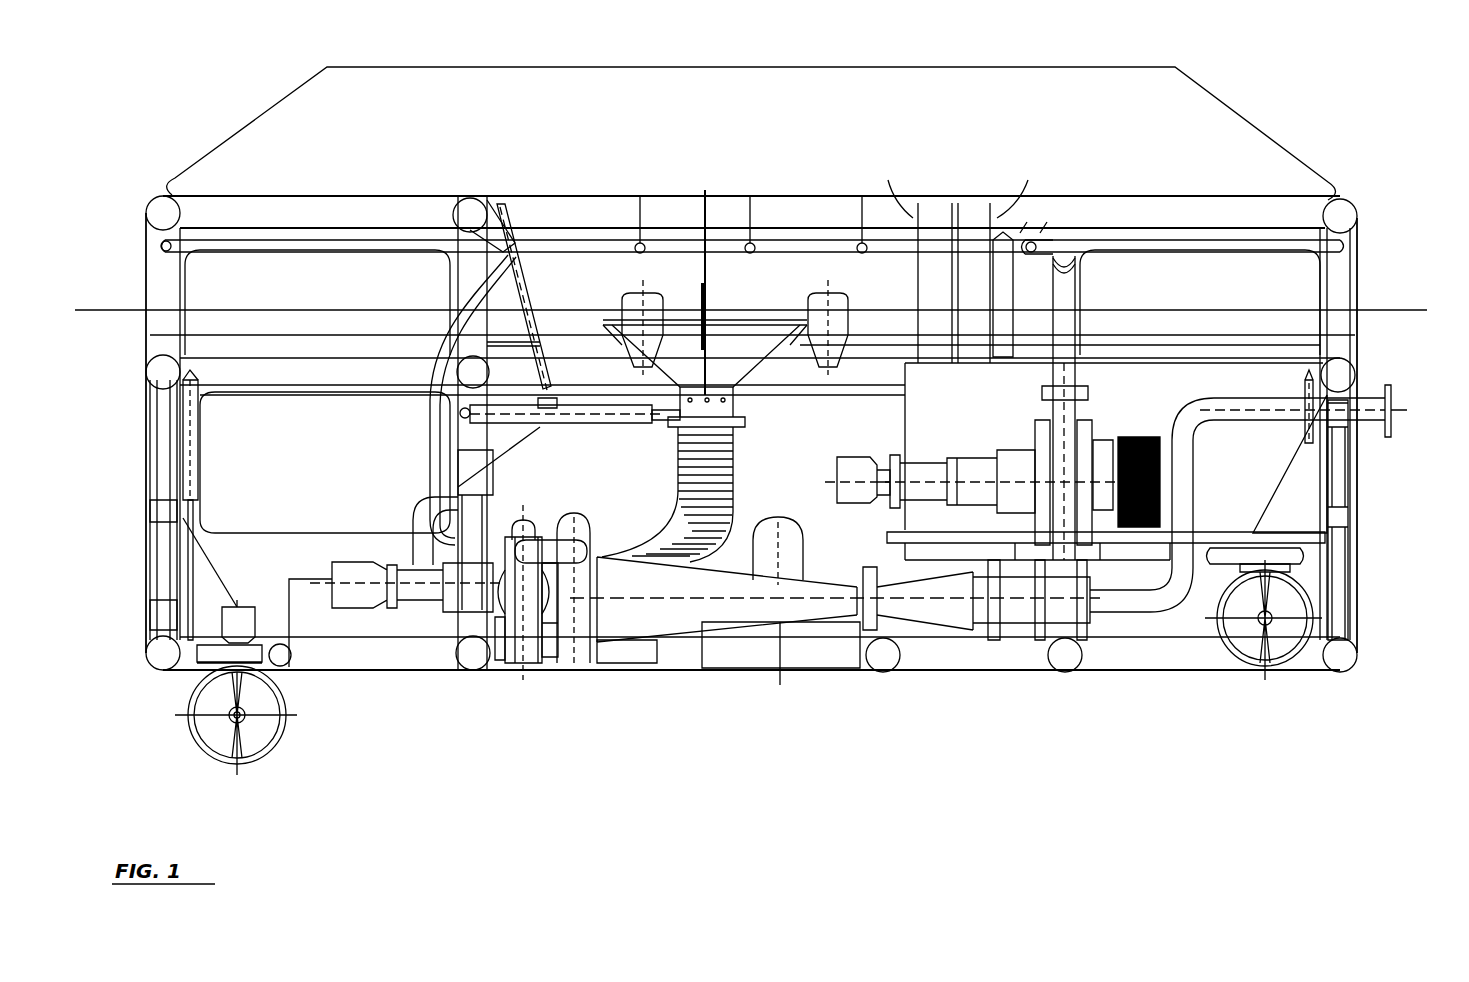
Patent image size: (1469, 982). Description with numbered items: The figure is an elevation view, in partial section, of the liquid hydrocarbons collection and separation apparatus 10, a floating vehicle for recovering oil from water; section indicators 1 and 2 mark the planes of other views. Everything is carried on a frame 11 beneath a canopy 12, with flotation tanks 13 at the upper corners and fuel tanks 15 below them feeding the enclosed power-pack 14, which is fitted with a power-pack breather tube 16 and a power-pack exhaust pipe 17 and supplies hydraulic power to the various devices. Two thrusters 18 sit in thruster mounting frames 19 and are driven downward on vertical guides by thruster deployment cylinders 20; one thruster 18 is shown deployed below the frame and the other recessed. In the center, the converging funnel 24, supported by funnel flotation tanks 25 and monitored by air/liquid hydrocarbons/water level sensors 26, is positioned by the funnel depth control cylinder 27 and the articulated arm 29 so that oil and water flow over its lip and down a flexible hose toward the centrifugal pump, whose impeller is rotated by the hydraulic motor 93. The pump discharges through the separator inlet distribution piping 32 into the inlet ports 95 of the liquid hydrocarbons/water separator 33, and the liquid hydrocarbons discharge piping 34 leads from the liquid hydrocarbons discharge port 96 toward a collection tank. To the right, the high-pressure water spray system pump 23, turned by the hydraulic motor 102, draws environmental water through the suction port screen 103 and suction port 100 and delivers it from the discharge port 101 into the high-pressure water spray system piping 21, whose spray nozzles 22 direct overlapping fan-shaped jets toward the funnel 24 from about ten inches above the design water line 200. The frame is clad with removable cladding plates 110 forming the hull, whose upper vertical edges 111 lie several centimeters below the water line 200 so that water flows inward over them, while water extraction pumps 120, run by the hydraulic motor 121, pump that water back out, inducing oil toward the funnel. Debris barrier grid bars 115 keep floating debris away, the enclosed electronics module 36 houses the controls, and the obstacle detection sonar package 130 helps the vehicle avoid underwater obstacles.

The section line 1 is at (1440, 262).
The section line 2 is at (78, 248).
The liquid hydrocarbons collection and separation apparatus 10 is at (1036, 722).
The frame 11 is at (418, 194).
The canopy 12 is at (858, 65).
The flotation tanks 13 is at (290, 277).
The enclosed power-pack 14 is at (903, 427).
The fuel tanks 15 is at (310, 446).
The power-pack breather tube 16 is at (930, 205).
The power-pack exhaust pipe 17 is at (985, 222).
The thrusters 18 is at (283, 734).
The thruster mounting frames 19 is at (212, 567).
The thruster deployment cylinders 20 is at (205, 428).
The high-pressure water spray system piping 21 is at (325, 236).
The spray nozzles 22 is at (173, 253).
The high-pressure water spray system pump 23 is at (978, 448).
The converging funnel 24 is at (748, 367).
The funnel flotation tanks 25 is at (808, 305).
The air/liquid hydrocarbons/water level sensors 26 is at (705, 228).
The funnel depth control cylinder 27 is at (533, 298).
The articulated arm 29 is at (615, 428).
The separator inlet distribution piping 32 is at (512, 663).
The liquid hydrocarbons/water separator 33 is at (731, 637).
The liquid hydrocarbons discharge piping 34 is at (1165, 600).
The enclosed electronics module 36 is at (340, 662).
The hydraulic motor 93 is at (360, 612).
The inlet ports 95 is at (568, 663).
The liquid hydrocarbons discharge port 96 is at (1093, 616).
The suction port 100 is at (1108, 412).
The discharge port 101 is at (1042, 392).
The hydraulic motor 102 is at (860, 457).
The suction port screen 103 is at (1138, 437).
The cladding plates 110 is at (148, 442).
The upper vertical edge 111 is at (150, 336).
The debris barrier grid bars 115 is at (190, 336).
The water extraction pumps 120 is at (625, 680).
The hydraulic motor 121 is at (578, 512).
The obstacle detection sonar package 130 is at (517, 510).
The design water line 200 is at (112, 305).